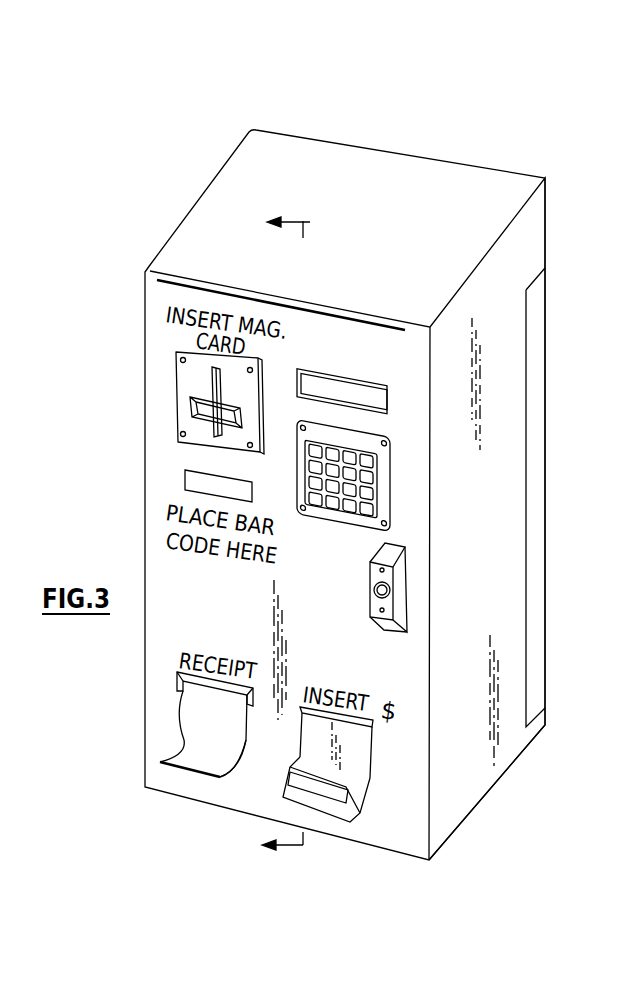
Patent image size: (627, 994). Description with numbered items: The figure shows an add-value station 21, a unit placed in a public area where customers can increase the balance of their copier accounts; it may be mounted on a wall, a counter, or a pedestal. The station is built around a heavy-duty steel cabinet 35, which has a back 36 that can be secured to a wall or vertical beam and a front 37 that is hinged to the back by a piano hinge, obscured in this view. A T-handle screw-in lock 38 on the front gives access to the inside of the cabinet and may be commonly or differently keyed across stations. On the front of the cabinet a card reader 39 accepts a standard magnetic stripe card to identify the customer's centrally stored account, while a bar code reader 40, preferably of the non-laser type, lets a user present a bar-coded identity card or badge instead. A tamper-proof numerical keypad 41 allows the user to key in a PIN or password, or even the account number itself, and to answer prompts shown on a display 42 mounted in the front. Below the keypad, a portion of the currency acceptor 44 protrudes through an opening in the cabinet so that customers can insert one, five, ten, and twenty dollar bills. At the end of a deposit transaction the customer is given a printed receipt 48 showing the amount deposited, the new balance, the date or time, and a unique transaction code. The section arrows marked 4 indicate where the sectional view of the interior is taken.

The add-value station 21 is at (550, 240).
The steel cabinet 35 is at (515, 525).
The back 36 is at (547, 463).
The front 37 is at (515, 655).
The T-handle screw-in lock 38 is at (400, 590).
The card reader 39 is at (178, 419).
The bar code reader 40 is at (190, 479).
The keypad 41 is at (381, 482).
The display 42 is at (338, 378).
The currency acceptor 44 is at (353, 750).
The printed receipt 48 is at (222, 764).
The section line 4- 4 is at (293, 544).